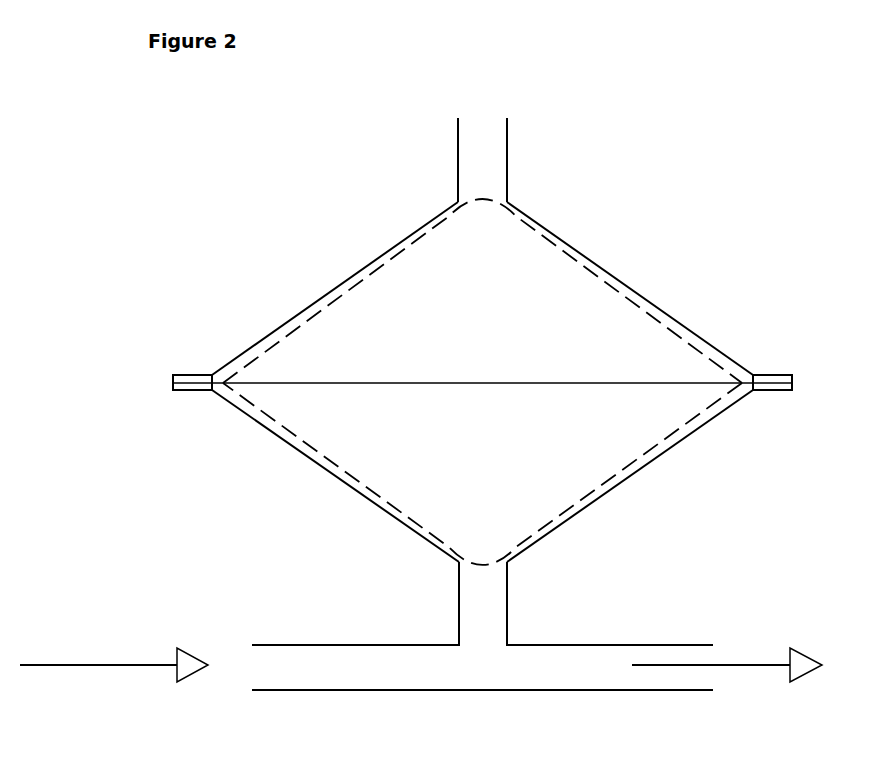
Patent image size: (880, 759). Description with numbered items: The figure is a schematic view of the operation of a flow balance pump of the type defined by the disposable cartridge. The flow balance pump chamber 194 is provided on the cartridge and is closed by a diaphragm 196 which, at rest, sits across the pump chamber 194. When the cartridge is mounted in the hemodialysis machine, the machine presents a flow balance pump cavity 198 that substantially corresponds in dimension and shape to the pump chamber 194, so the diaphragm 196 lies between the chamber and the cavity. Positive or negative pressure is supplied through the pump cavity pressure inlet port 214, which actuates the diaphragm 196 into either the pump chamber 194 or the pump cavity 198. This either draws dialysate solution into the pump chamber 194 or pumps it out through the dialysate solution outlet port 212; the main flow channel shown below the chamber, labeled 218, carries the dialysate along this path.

The pump cavity pressure inlet port 214 is at (472, 150).
The diaphragm 196 is at (530, 225).
The flow balance pump cavity 198 is at (635, 343).
The flow balance pump chamber 194 is at (635, 420).
The inlet main channel 218 is at (318, 670).
The dialysate solution outlet port 212 is at (612, 670).